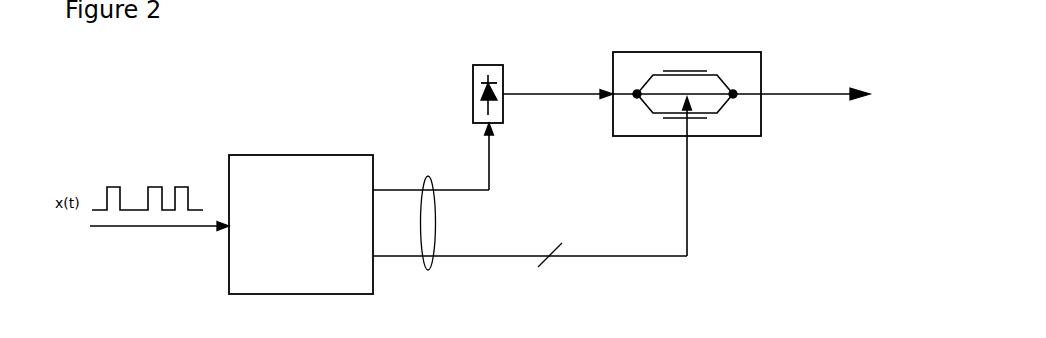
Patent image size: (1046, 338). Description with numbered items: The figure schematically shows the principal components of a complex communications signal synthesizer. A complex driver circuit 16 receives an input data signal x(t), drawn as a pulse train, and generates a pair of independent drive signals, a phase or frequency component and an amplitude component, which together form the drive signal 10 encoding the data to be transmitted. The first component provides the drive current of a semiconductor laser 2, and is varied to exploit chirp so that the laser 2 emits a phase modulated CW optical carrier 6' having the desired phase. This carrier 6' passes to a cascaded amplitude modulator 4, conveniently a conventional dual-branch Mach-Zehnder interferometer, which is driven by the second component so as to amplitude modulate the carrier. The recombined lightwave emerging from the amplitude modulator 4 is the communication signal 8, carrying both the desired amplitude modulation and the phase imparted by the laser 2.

The laser 2 is at (488, 65).
The amplitude modulator 4 is at (720, 52).
The phase modulated CW optical carrier 6' is at (558, 78).
The communication signal 8 is at (822, 94).
The drive signal 10 is at (428, 270).
The complex driver circuit 16 is at (303, 155).